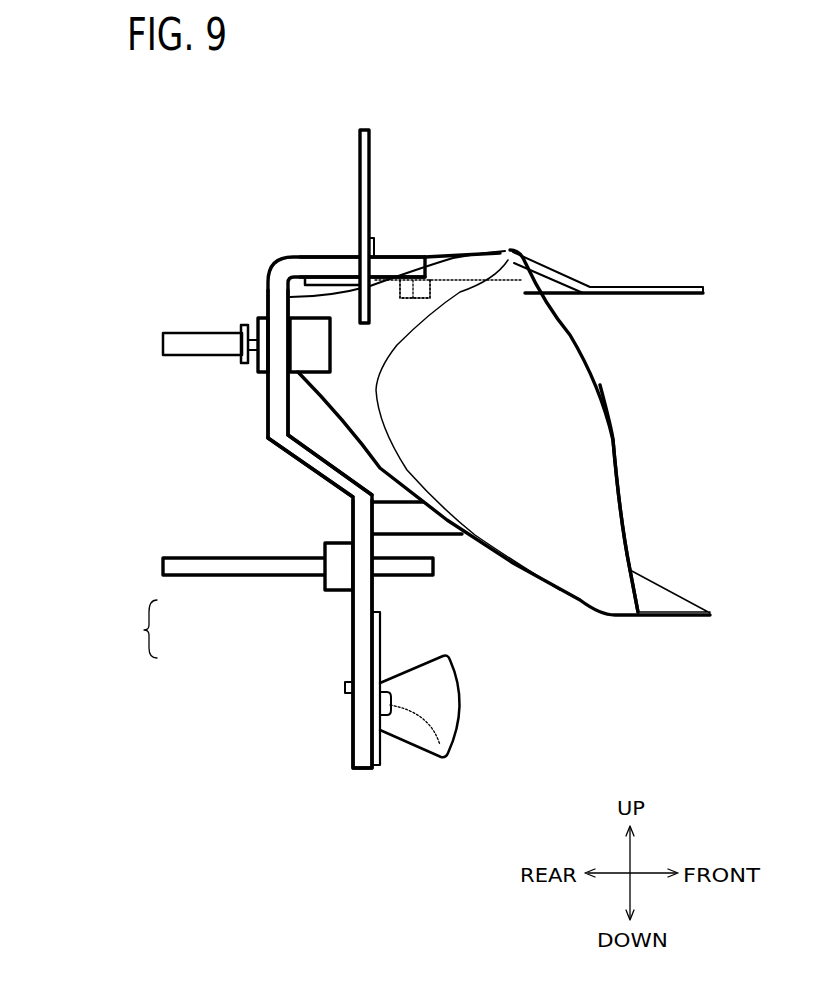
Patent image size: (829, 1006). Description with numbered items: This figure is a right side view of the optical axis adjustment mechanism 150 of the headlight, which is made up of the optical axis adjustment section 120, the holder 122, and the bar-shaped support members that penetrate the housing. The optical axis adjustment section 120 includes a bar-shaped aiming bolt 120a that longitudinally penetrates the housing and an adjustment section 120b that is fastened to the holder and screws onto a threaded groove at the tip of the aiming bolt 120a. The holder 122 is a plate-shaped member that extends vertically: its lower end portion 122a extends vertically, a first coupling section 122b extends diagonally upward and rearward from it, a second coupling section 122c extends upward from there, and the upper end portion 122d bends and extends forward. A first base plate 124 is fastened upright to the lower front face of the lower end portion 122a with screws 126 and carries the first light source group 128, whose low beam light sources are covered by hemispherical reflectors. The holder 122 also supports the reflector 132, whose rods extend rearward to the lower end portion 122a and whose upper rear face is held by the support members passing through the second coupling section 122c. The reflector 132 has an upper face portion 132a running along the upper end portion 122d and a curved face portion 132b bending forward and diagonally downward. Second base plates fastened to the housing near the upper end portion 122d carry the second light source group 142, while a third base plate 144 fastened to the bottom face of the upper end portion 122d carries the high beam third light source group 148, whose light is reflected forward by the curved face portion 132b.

The optical axis adjustment section 120 is at (128, 629).
The aiming bolt 120a is at (188, 566).
The adjustment section 120b is at (333, 583).
The holder 122 is at (258, 441).
The lower end portion 122a is at (353, 730).
The first coupling section 122b is at (317, 477).
The second coupling section 122c is at (272, 300).
The upper end portion 122d is at (331, 274).
The first base plate 124 is at (382, 628).
The screws 126 is at (344, 688).
The first light source group 128 is at (398, 693).
The reflector 132 is at (616, 368).
The upper face portion 132a is at (648, 286).
The curved face portion 132b is at (323, 383).
The second light source group 142 is at (411, 237).
The third base plate 144 is at (322, 276).
The third light source group 148 is at (402, 304).
The optical axis adjustment mechanism 150 is at (236, 224).